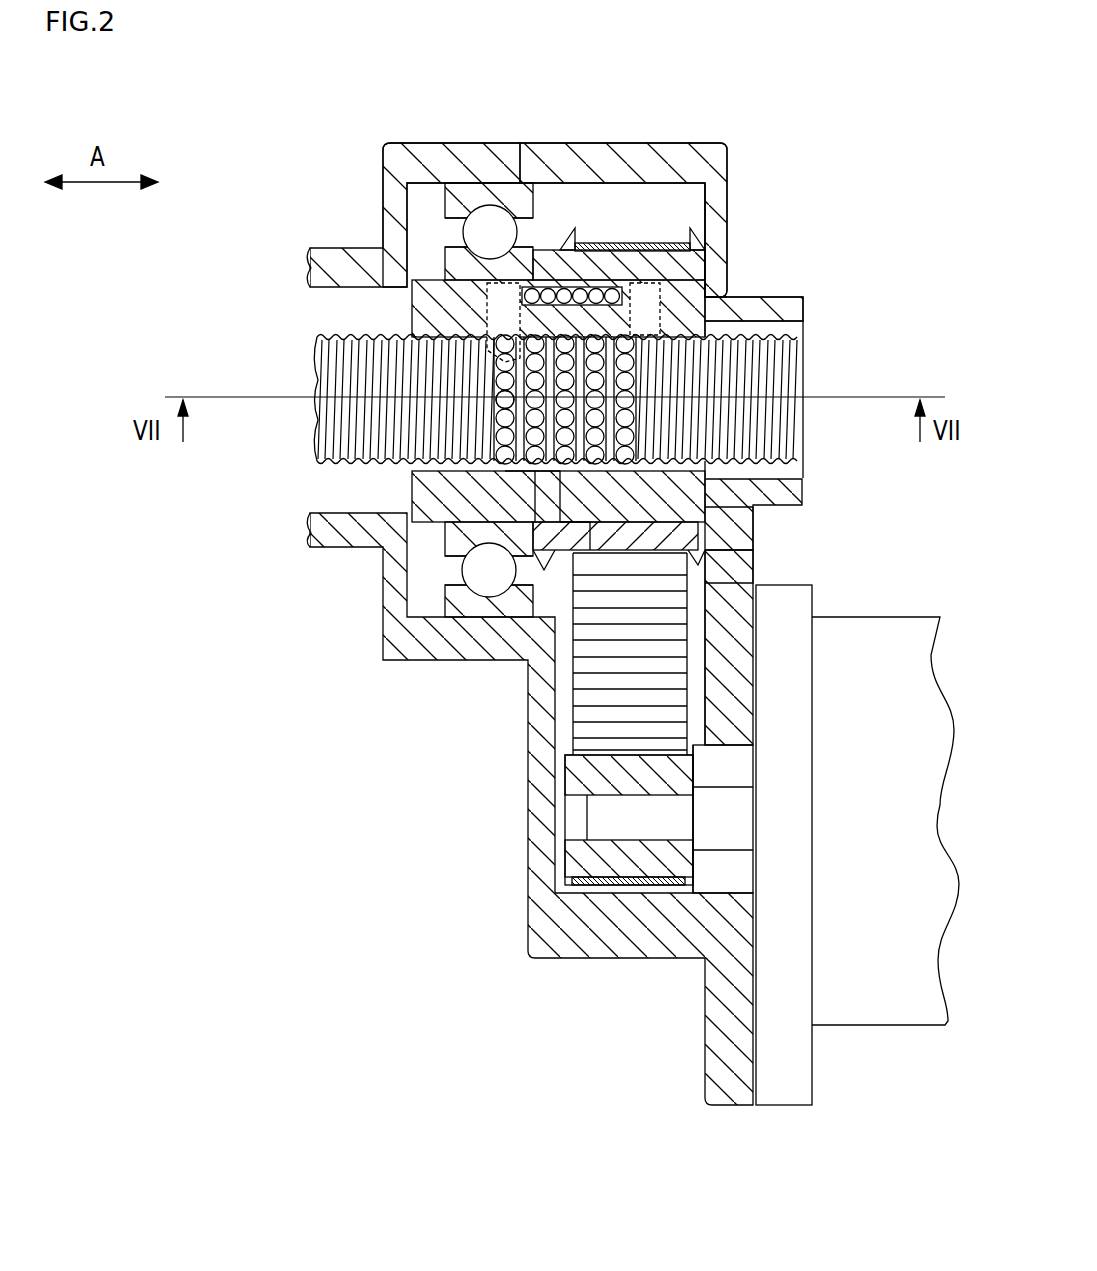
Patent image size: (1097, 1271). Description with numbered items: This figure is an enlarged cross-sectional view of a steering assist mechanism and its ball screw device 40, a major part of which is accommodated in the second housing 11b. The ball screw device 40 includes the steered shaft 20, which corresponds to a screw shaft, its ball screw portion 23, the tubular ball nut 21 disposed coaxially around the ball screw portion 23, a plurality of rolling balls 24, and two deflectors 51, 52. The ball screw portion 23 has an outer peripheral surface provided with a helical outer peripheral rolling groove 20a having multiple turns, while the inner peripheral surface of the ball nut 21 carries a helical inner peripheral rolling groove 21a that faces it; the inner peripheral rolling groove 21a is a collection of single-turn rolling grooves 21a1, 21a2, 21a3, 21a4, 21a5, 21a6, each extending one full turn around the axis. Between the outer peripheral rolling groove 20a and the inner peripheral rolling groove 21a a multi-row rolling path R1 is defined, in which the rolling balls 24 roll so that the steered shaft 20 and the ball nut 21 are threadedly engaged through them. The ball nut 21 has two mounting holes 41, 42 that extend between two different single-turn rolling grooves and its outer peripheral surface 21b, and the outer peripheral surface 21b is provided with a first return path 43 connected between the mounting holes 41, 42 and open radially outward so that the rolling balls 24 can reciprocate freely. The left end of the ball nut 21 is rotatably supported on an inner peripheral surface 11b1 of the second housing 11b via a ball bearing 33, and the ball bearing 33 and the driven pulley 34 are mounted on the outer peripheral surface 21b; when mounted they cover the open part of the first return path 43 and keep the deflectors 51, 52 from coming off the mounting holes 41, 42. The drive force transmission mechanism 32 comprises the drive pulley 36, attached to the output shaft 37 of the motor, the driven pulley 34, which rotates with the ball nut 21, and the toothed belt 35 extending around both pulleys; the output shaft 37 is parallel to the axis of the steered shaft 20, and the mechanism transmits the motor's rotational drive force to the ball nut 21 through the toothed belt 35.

The inner peripheral surface 11b1 is at (396, 152).
The second housing 11b is at (550, 150).
The ball bearing 33 is at (518, 200).
The first return path 43 is at (588, 242).
The driven pulley 34 is at (636, 250).
The mounting hole 41 is at (686, 244).
The deflector 51 is at (722, 292).
The ball nut 21 is at (597, 324).
The ball screw portion 23 is at (766, 322).
The steered shaft 20 is at (609, 324).
The inner peripheral rolling groove 21a is at (790, 356).
The rolling balls 24 is at (705, 467).
The outer peripheral rolling groove 20a is at (800, 490).
The single-turn rolling groove 21a6 is at (712, 522).
The single-turn rolling groove 21a5 is at (742, 562).
The single-turn rolling groove 21a4 is at (765, 620).
The ball screw device 40 is at (412, 252).
The deflector 52 is at (486, 303).
The mounting hole 42 is at (560, 333).
The multi-row rolling path R1 is at (505, 400).
The outer peripheral surface 21b is at (450, 530).
The single-turn rolling groove 21a1 is at (535, 490).
The single-turn rolling groove 21a2 is at (560, 500).
The single-turn rolling groove 21a3 is at (585, 550).
The toothed belt 35 is at (585, 690).
The drive force transmission mechanism 32 is at (546, 811).
The drive pulley 36 is at (582, 882).
The output shaft 37 is at (724, 826).